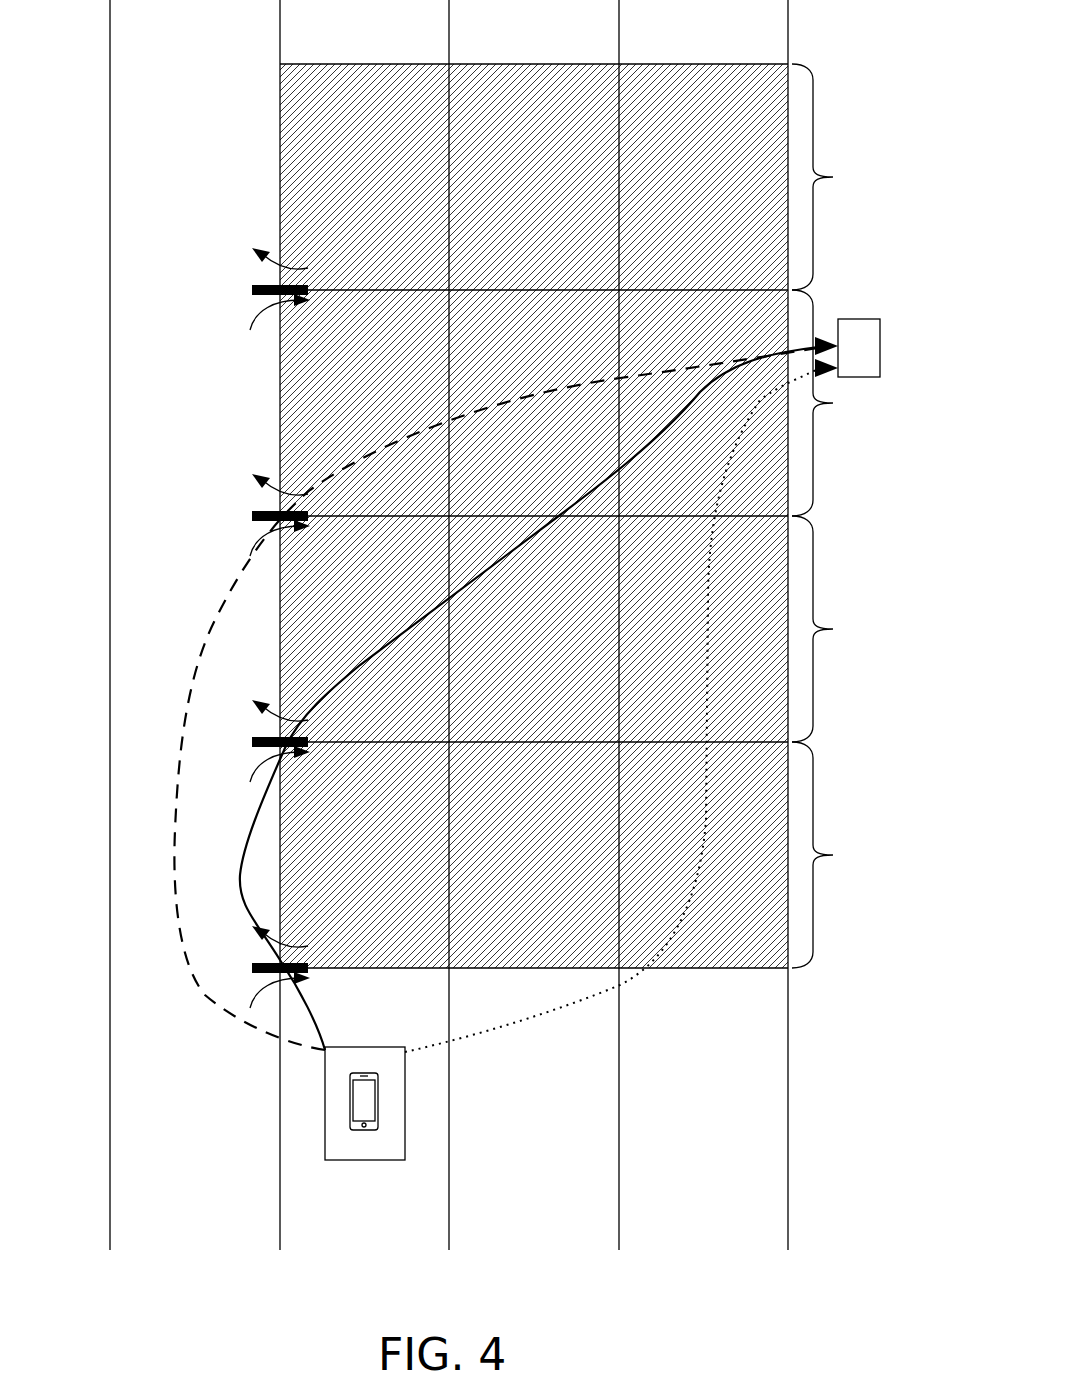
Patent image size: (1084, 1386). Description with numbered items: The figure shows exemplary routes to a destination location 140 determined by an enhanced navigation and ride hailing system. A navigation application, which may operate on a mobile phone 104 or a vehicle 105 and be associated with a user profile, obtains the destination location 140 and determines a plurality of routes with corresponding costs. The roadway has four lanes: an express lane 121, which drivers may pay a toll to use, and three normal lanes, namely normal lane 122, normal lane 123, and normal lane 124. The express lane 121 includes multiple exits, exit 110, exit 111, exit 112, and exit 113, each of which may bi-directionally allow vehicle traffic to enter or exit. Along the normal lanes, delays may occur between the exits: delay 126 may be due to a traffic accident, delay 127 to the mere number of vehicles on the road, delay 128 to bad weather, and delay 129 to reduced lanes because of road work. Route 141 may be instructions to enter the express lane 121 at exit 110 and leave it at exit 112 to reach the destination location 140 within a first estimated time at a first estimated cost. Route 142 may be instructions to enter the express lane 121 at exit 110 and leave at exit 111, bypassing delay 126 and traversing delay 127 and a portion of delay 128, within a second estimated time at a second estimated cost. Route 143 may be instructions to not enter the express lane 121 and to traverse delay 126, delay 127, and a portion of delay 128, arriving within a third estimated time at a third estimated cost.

The mobile phone 104 is at (363, 1103).
The vehicle 105 is at (363, 1047).
The exit 110 is at (499, 967).
The exit 111 is at (499, 741).
The exit 112 is at (499, 515).
The exit 113 is at (497, 289).
The express lane 121 is at (163, 625).
The normal lane 122 is at (332, 625).
The normal lane 123 is at (500, 625).
The normal lane 124 is at (703, 625).
The delay 126 is at (871, 855).
The delay 127 is at (871, 629).
The delay 128 is at (871, 403).
The delay 129 is at (871, 177).
The destination location 140 is at (880, 358).
The route 141 is at (232, 607).
The route 142 is at (240, 895).
The route 143 is at (706, 618).